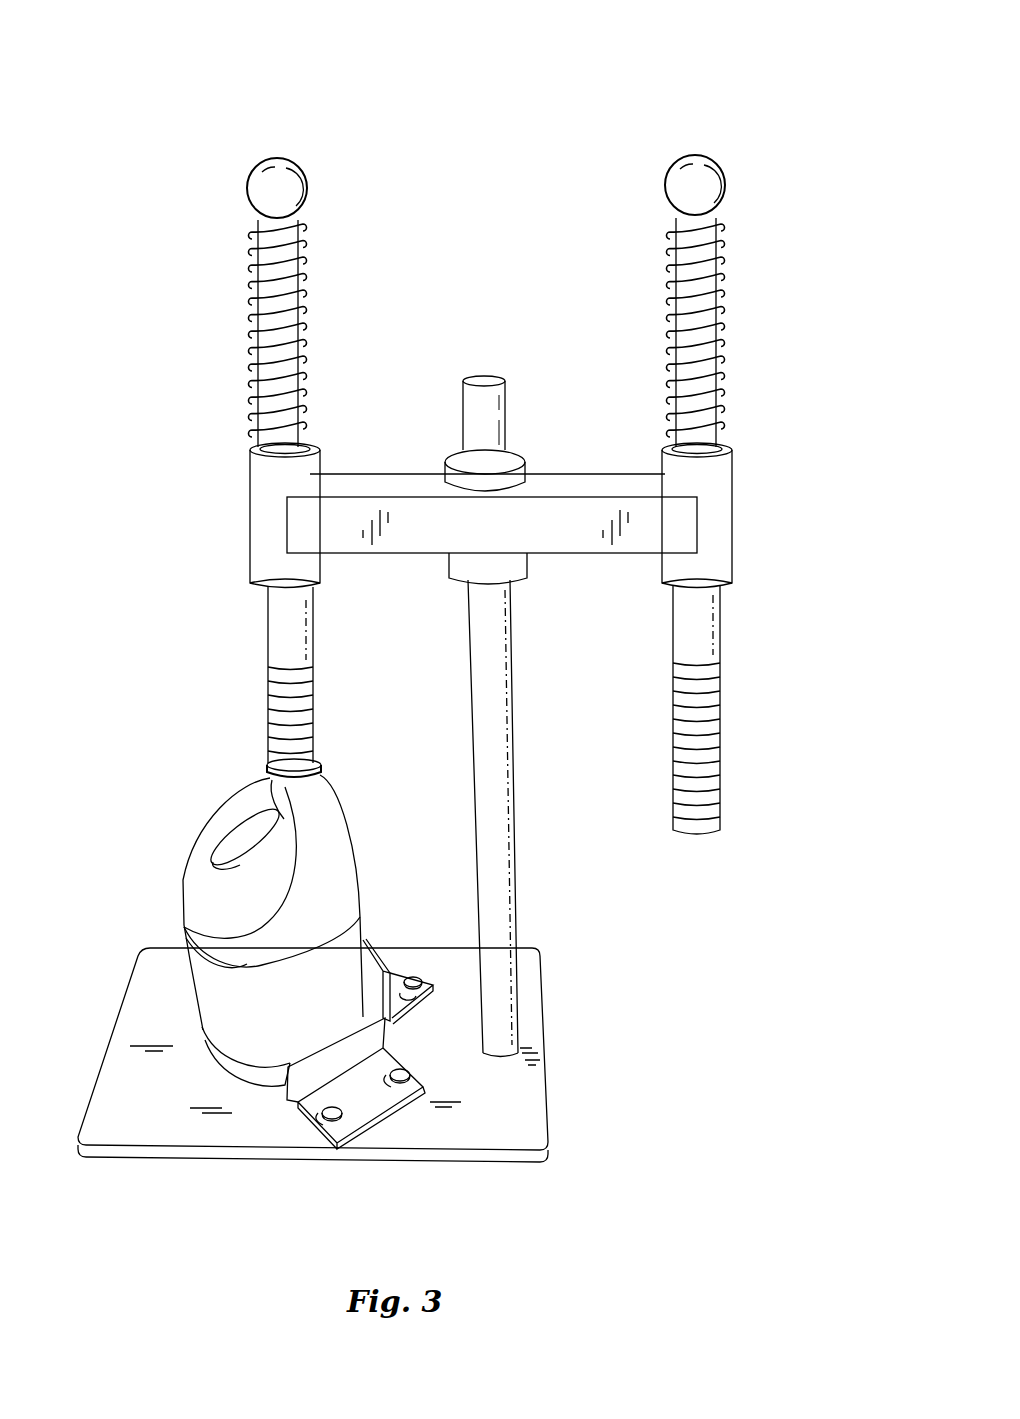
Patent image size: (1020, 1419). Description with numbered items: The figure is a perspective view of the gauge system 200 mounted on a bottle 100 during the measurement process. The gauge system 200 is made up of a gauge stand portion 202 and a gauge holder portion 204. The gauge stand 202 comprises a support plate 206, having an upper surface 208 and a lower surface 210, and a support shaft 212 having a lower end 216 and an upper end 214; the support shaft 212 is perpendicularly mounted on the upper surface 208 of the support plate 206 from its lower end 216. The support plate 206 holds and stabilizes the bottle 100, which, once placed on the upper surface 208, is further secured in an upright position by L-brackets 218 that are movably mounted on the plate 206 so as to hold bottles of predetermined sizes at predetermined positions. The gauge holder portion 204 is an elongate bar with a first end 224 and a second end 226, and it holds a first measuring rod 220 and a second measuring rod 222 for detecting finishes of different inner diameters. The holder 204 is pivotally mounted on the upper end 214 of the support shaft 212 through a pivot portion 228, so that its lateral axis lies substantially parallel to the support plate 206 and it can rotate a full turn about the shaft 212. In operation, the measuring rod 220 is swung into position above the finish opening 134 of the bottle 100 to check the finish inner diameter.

The bottle 100 is at (185, 812).
The finish opening 134 is at (266, 752).
The gauge system 200 is at (626, 92).
The gauge stand portion 202 is at (540, 813).
The gauge holder portion 204 is at (745, 476).
The support plate 206 is at (527, 1127).
The upper surface 208 is at (522, 1080).
The lower surface 210 is at (474, 1178).
The support shaft 212 is at (512, 858).
The upper end 214 is at (440, 430).
The lower end 216 is at (524, 965).
The L-bracket 218 is at (318, 1122).
The first measuring rod 220 is at (315, 690).
The second measuring rod 222 is at (719, 623).
The first end 224 is at (250, 503).
The second end 226 is at (735, 502).
The pivot portion 228 is at (530, 447).